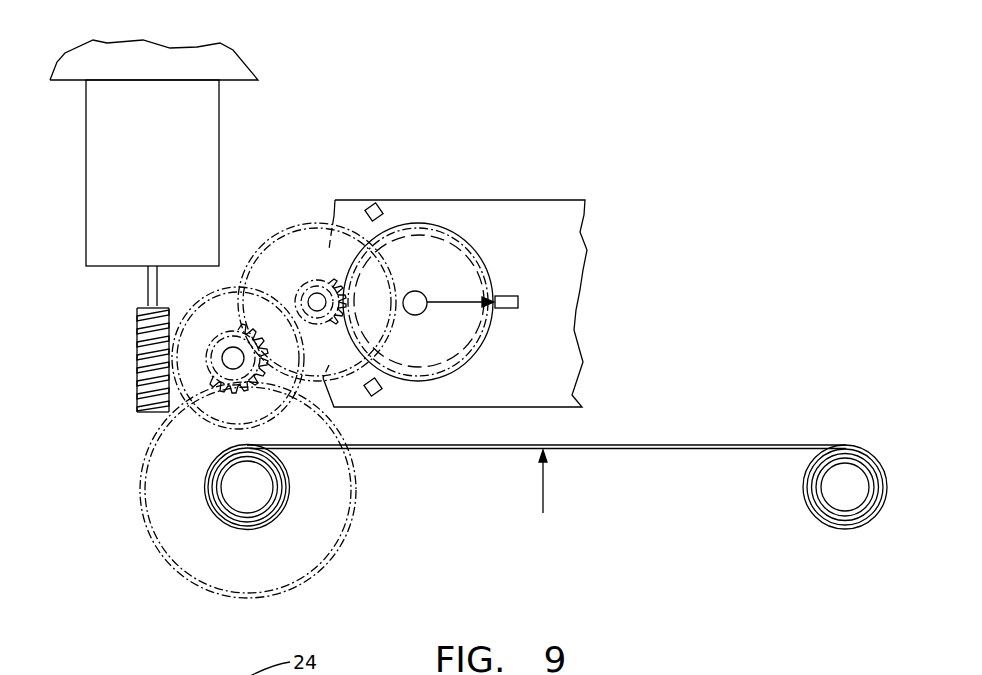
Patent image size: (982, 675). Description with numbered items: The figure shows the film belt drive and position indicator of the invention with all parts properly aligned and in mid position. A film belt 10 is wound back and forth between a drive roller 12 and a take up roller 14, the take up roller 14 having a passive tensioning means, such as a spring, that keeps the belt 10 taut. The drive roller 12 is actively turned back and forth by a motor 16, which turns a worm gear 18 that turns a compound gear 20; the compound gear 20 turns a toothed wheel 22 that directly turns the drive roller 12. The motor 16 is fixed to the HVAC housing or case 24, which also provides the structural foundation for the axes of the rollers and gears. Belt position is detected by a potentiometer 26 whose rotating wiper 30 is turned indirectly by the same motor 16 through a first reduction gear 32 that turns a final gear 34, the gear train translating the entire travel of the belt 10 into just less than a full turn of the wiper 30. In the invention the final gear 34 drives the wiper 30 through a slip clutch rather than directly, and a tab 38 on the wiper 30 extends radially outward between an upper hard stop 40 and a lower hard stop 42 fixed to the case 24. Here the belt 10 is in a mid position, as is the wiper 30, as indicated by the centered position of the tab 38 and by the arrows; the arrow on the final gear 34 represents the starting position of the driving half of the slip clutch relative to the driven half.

The belt 10 is at (636, 445).
The drive roller 12 is at (220, 517).
The take up roller 14 is at (818, 521).
The motor 16 is at (222, 133).
The worm gear 18 is at (138, 363).
The compound gear 20 is at (228, 287).
The toothed wheel 22 is at (348, 530).
The HVAC housing or case 24 is at (234, 50).
The potentiometer 26 is at (555, 200).
The wiper 30 is at (478, 250).
The first reduction gear 32 is at (318, 226).
The final gear 34 is at (442, 226).
The tab 38 is at (518, 302).
The upper hard stop 40 is at (382, 210).
The lower hard stop 42 is at (378, 396).